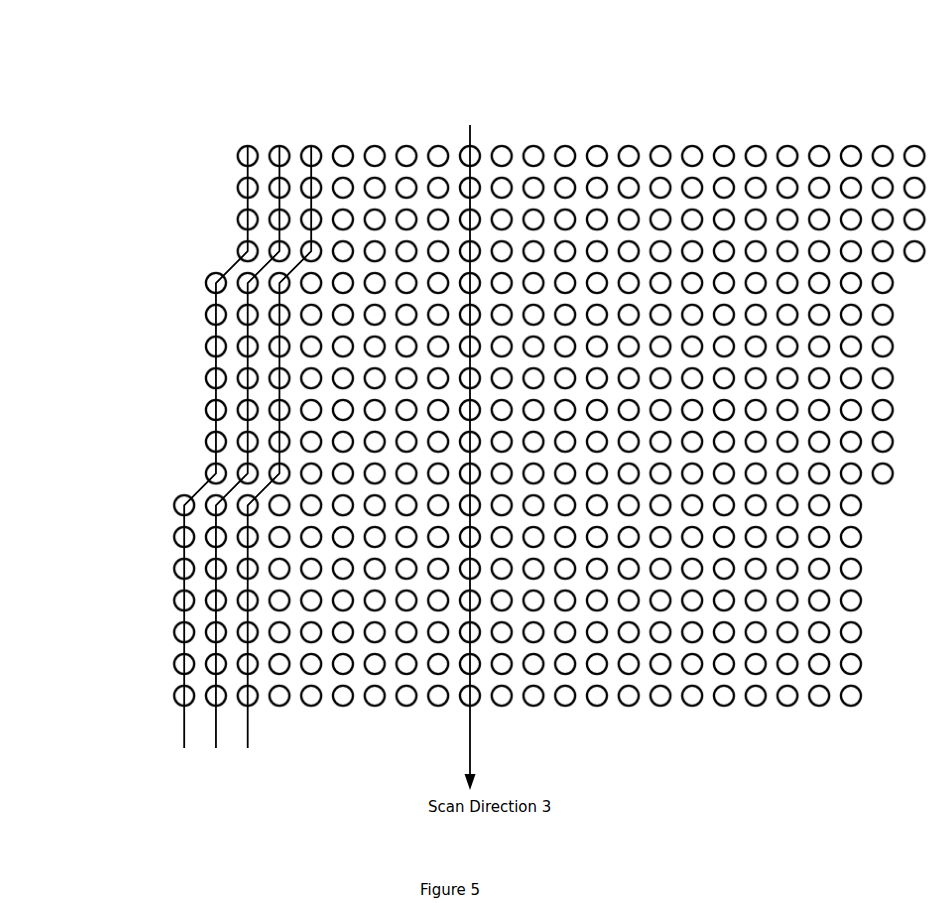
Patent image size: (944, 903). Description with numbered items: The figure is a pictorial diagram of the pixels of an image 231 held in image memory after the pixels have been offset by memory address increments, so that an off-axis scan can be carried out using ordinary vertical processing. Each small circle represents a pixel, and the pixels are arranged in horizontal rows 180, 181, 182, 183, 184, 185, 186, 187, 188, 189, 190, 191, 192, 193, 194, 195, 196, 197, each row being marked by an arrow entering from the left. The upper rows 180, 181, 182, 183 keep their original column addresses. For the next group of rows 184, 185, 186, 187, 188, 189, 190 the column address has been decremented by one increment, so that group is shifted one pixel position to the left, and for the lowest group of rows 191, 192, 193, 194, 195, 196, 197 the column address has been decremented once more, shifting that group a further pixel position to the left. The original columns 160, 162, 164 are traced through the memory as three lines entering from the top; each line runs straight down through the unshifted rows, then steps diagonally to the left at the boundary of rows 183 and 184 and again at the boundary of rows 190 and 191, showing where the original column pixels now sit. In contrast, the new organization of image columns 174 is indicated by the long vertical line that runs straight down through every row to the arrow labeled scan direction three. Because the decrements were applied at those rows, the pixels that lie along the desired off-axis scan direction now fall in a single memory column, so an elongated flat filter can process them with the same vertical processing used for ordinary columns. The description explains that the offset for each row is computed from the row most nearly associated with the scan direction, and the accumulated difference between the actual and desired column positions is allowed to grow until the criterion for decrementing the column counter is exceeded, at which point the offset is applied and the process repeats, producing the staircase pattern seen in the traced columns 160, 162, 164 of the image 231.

The original column 160 is at (247, 136).
The original column 162 is at (280, 136).
The original column 164 is at (312, 136).
The new organization of image columns 174 is at (470, 125).
The image 231 is at (481, 385).
The row 180 is at (193, 157).
The row 181 is at (193, 189).
The row 182 is at (193, 220).
The row 183 is at (193, 252).
The row 184 is at (157, 284).
The row 185 is at (157, 316).
The row 186 is at (157, 348).
The row 187 is at (157, 380).
The row 188 is at (157, 411).
The row 189 is at (157, 443).
The row 190 is at (157, 474).
The row 191 is at (135, 506).
The row 192 is at (135, 538).
The row 193 is at (135, 570).
The row 194 is at (135, 602).
The row 195 is at (135, 634).
The row 196 is at (135, 665).
The row 197 is at (135, 697).